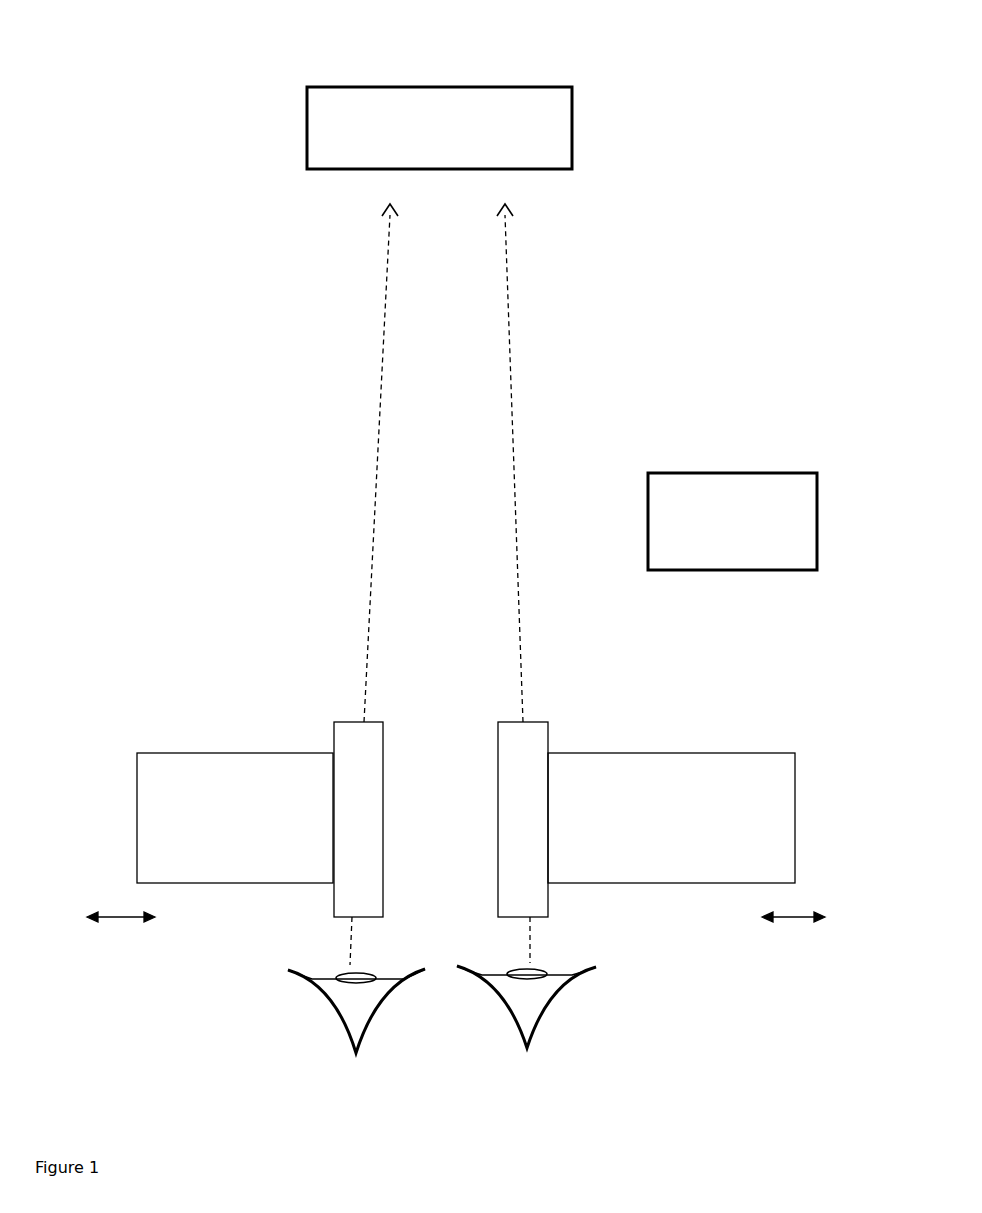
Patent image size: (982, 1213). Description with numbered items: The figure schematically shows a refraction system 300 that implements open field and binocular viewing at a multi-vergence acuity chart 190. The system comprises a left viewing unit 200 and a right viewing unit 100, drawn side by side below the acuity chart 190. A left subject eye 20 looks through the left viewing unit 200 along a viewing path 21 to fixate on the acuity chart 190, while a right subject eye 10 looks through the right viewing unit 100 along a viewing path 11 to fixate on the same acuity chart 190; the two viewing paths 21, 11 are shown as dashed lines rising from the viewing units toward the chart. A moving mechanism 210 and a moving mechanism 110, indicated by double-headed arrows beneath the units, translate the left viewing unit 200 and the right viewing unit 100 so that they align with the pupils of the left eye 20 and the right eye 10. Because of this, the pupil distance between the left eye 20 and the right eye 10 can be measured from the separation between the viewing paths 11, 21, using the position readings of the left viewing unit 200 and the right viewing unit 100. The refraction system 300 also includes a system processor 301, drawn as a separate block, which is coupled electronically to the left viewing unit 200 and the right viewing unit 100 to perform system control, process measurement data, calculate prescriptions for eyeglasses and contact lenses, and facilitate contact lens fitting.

The multi-vergence acuity chart 190 is at (572, 118).
The refraction system 300 is at (118, 311).
The system processor 301 is at (817, 520).
The viewing path 21 is at (377, 439).
The viewing path 11 is at (513, 442).
The left viewing unit 200 is at (162, 753).
The right viewing unit 100 is at (765, 753).
The moving mechanism 210 is at (121, 936).
The moving mechanism 110 is at (793, 936).
The left subject eye 20 is at (360, 1032).
The right subject eye 10 is at (528, 1027).